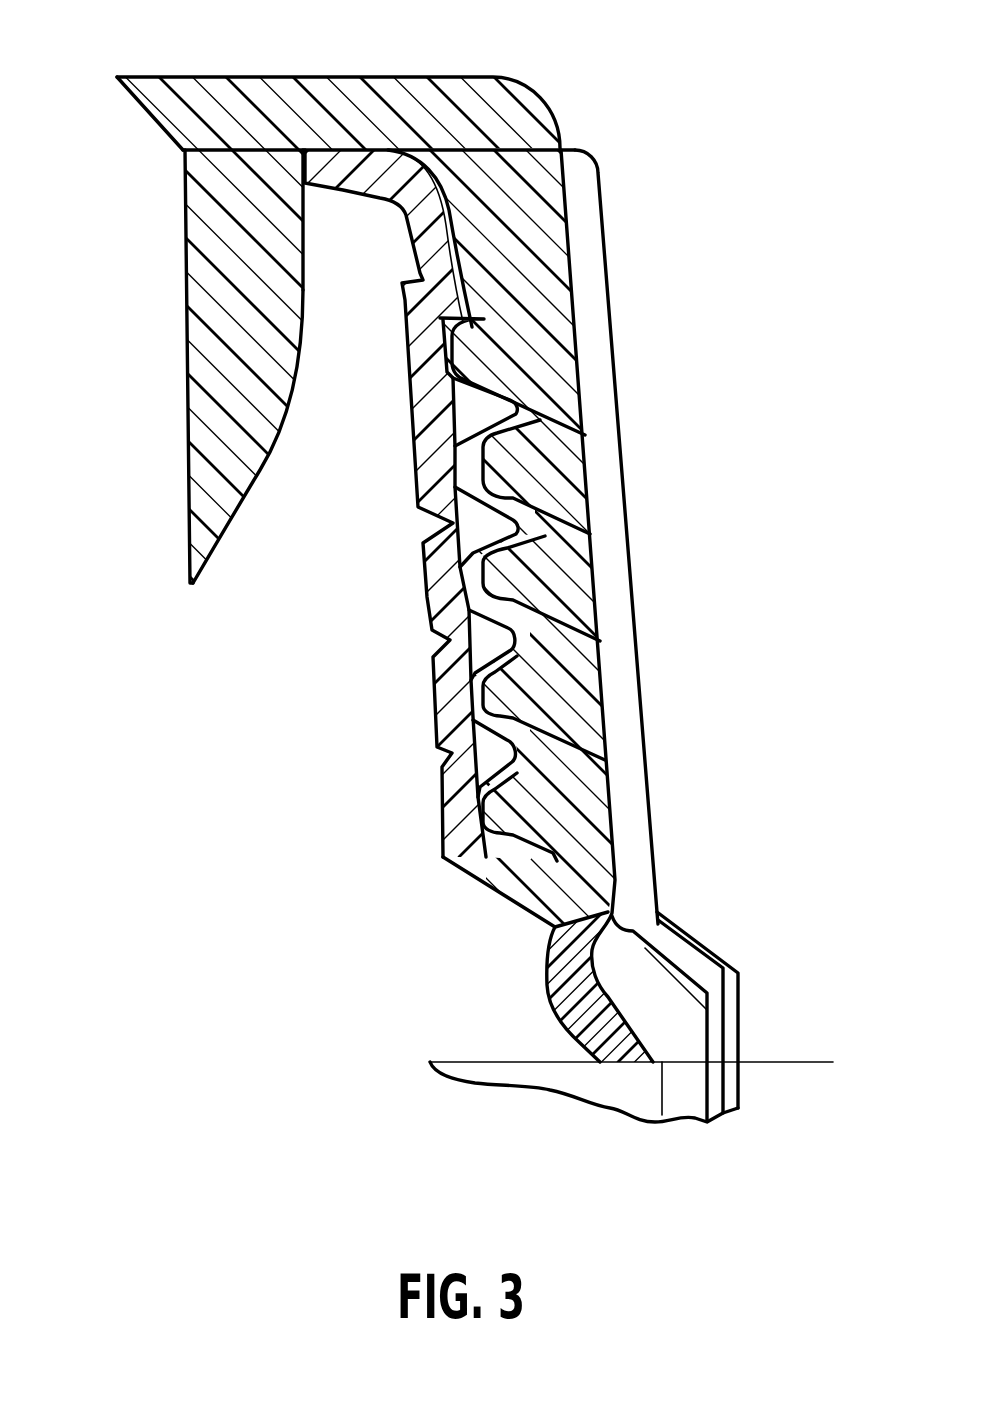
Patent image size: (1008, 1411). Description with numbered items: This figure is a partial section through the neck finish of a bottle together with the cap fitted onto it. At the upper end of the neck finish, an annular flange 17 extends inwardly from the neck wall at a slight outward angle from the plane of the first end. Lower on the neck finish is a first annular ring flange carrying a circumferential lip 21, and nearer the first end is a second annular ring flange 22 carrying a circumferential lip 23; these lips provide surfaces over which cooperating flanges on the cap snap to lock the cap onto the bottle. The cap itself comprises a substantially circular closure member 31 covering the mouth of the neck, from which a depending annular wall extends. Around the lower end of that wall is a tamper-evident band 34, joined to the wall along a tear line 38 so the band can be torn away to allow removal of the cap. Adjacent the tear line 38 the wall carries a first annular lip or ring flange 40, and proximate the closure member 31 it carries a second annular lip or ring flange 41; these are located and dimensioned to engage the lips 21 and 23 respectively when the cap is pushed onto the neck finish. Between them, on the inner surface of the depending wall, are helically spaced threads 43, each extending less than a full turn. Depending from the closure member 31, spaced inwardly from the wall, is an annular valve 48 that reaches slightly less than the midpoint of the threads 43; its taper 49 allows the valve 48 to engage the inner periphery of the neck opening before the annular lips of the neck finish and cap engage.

The annular flange 17 is at (373, 177).
The circumferential lip 21 is at (617, 913).
The second annular ring flange 22 is at (480, 292).
The circumferential lip 23 is at (467, 309).
The closure member 31 is at (270, 77).
The tamper-evident band 34 is at (740, 1012).
The tear line 38 is at (660, 910).
The first annular lip or ring flange 40 is at (633, 933).
The second annular lip or ring flange 41 is at (471, 327).
The helically spaced threads 43 is at (497, 690).
The depending annular valve 48 is at (185, 280).
The taper 49 is at (263, 489).